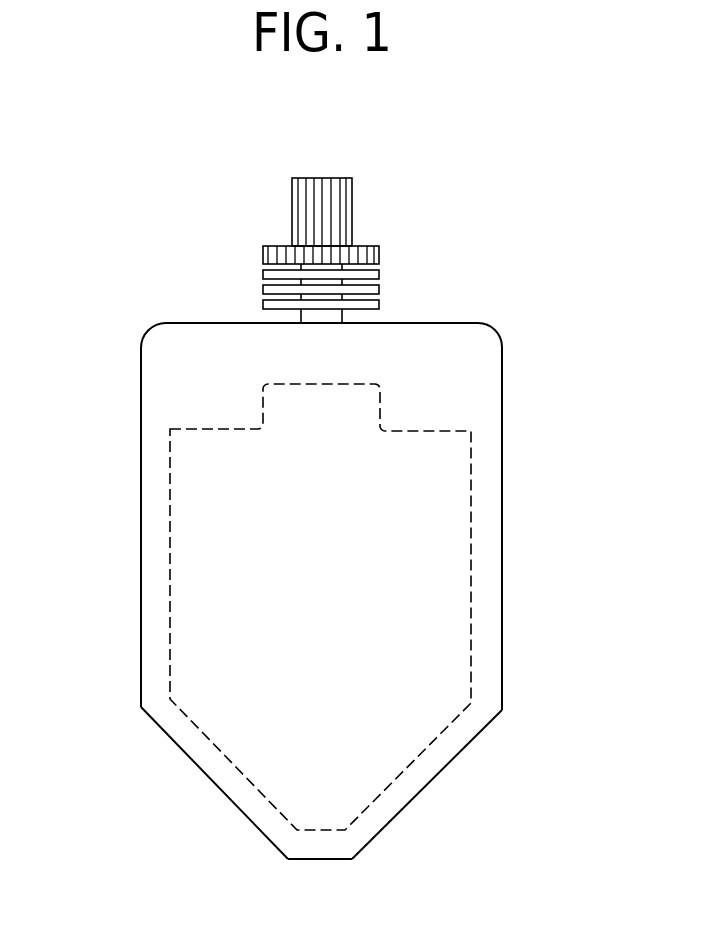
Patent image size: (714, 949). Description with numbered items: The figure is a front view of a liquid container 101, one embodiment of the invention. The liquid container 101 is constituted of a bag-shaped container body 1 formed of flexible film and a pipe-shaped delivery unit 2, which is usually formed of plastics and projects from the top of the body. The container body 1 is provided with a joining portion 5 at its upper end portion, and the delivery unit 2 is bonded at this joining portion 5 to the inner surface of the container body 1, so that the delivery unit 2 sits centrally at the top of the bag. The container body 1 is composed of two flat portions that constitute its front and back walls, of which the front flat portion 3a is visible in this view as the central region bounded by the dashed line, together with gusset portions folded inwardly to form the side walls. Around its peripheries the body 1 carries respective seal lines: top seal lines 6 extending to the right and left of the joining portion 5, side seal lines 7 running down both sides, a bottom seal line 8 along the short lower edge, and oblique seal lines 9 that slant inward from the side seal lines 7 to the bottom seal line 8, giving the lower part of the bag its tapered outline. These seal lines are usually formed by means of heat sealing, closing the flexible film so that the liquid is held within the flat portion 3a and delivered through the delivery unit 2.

The liquid container 101 is at (90, 97).
The container body 1 is at (200, 308).
The delivery unit 2 is at (262, 232).
The flat portion 3a is at (398, 603).
The joining portion 5 is at (367, 348).
The top seal lines 6 is at (485, 391).
The side seal lines 7 is at (488, 507).
The bottom seal line 8 is at (320, 845).
The oblique seal lines 9 is at (420, 775).